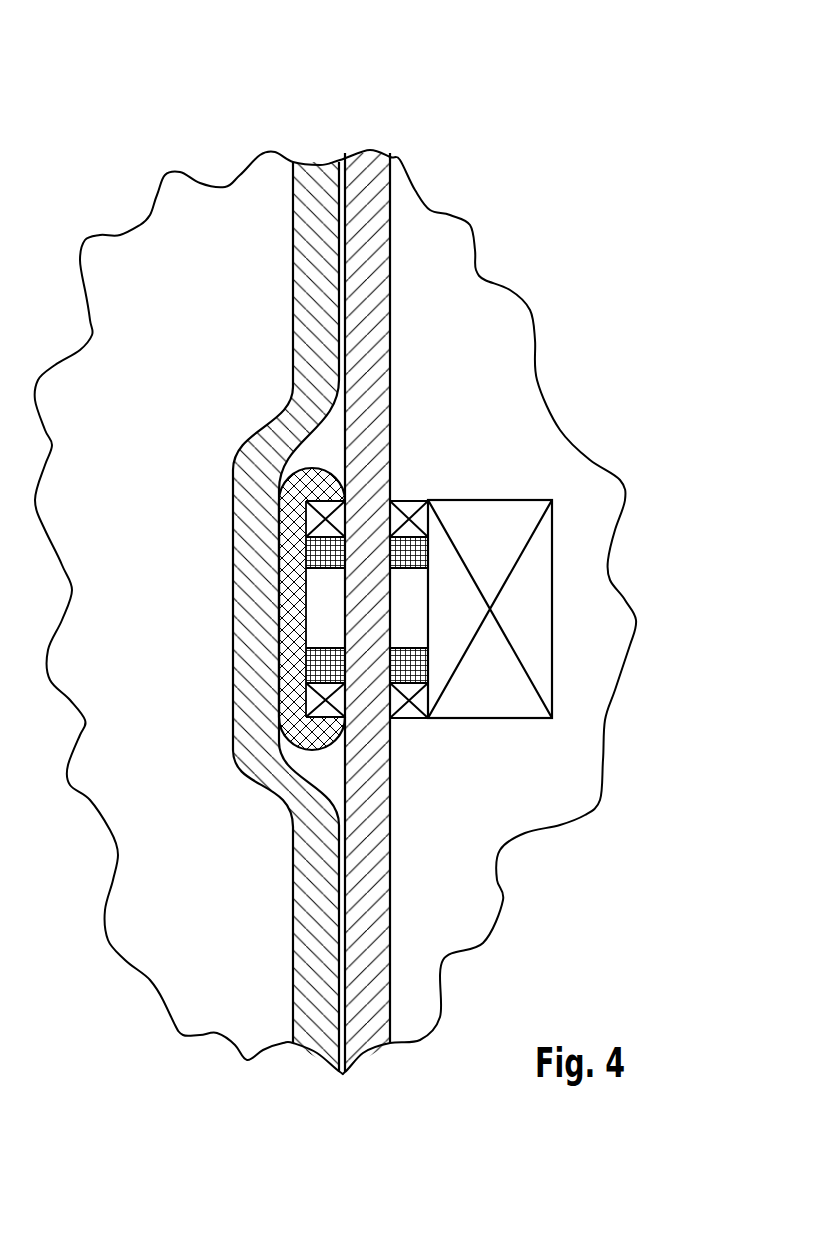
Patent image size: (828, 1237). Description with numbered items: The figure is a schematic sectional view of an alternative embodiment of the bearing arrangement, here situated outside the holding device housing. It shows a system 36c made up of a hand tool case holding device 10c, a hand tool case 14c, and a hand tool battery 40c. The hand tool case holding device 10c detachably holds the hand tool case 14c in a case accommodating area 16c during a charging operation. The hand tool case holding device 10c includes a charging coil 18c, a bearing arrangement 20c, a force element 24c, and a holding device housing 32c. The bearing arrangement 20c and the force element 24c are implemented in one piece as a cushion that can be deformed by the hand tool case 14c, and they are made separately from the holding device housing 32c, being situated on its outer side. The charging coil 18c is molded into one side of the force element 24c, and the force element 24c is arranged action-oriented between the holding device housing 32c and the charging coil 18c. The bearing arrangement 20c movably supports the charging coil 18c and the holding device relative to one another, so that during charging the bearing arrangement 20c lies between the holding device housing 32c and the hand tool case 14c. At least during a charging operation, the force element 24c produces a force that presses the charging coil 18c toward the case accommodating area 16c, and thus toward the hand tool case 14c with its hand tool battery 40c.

The hand tool case holding device 10c is at (218, 105).
The hand tool case 14c is at (432, 570).
The case accommodating area 16c is at (430, 148).
The charging coil 18c is at (290, 687).
The bearing arrangement 20c is at (236, 609).
The force element 24c is at (289, 594).
The holding device housing 32c is at (307, 285).
The system 36c is at (343, 146).
The hand tool battery 40c is at (538, 594).